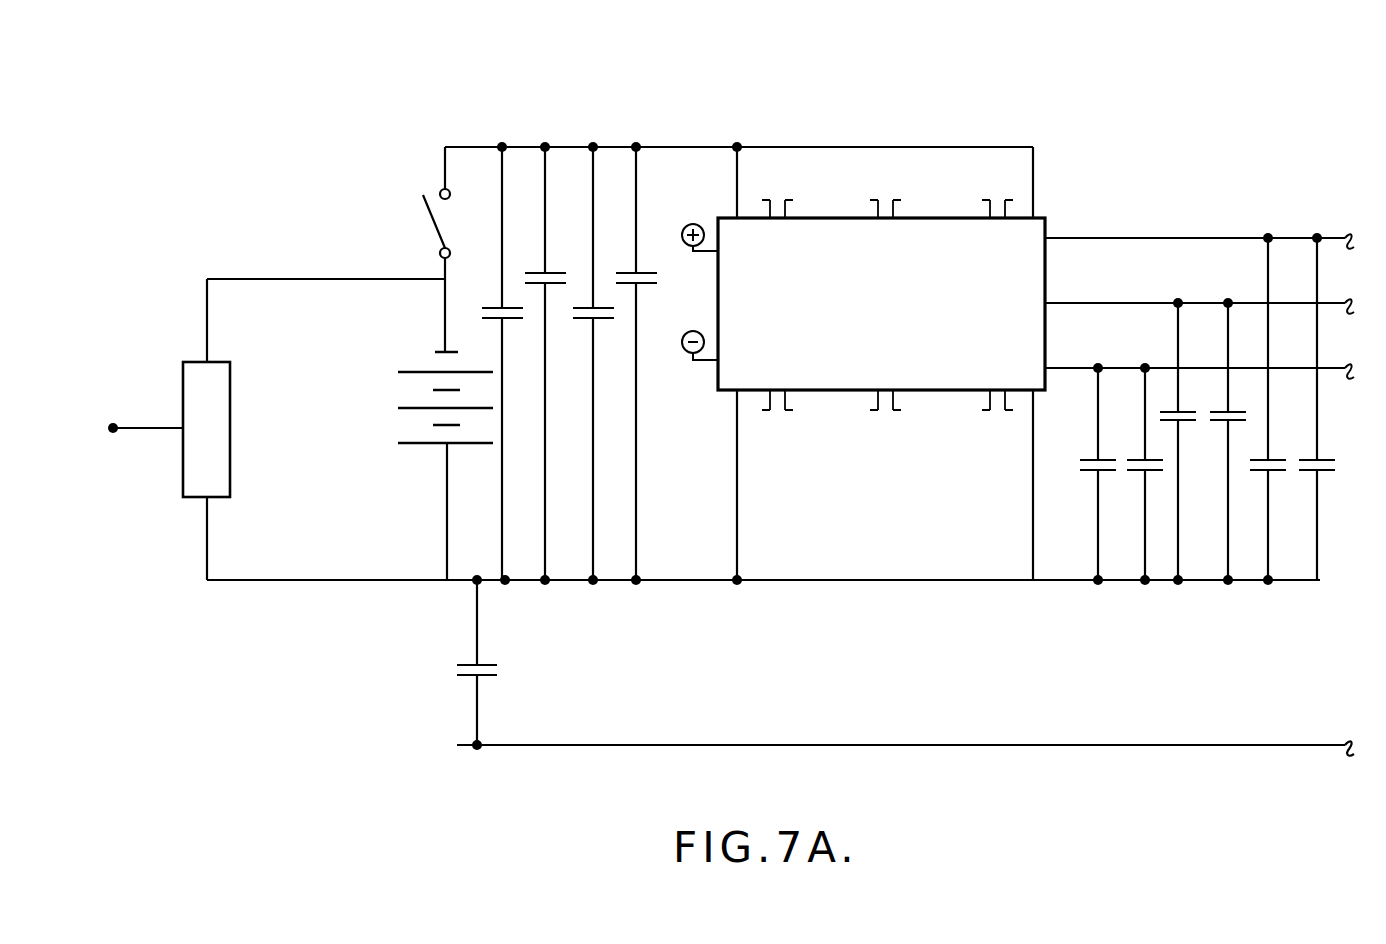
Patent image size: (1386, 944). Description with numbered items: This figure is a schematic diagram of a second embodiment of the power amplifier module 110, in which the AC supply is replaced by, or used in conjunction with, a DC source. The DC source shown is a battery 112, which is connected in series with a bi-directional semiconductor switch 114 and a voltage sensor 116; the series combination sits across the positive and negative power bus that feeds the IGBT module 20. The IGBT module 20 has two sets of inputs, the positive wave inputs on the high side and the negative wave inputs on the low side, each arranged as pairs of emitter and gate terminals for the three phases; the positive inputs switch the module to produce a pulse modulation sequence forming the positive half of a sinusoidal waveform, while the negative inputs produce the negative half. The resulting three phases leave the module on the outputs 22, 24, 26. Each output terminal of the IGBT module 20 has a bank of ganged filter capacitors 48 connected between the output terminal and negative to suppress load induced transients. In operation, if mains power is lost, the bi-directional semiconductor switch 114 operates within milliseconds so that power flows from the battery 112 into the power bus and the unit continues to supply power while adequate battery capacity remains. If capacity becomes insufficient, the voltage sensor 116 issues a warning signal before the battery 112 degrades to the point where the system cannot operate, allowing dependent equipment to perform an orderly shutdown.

The power amplifier module 110 is at (620, 113).
The battery 112 is at (410, 393).
The bi-directional semiconductor switch 114 is at (440, 190).
The voltage sensor 116 is at (182, 462).
The IGBT module 20 is at (1047, 222).
The output 22 is at (1355, 210).
The output 24 is at (1341, 299).
The output 26 is at (1352, 380).
The ganged filter capacitors 48 is at (1122, 480).